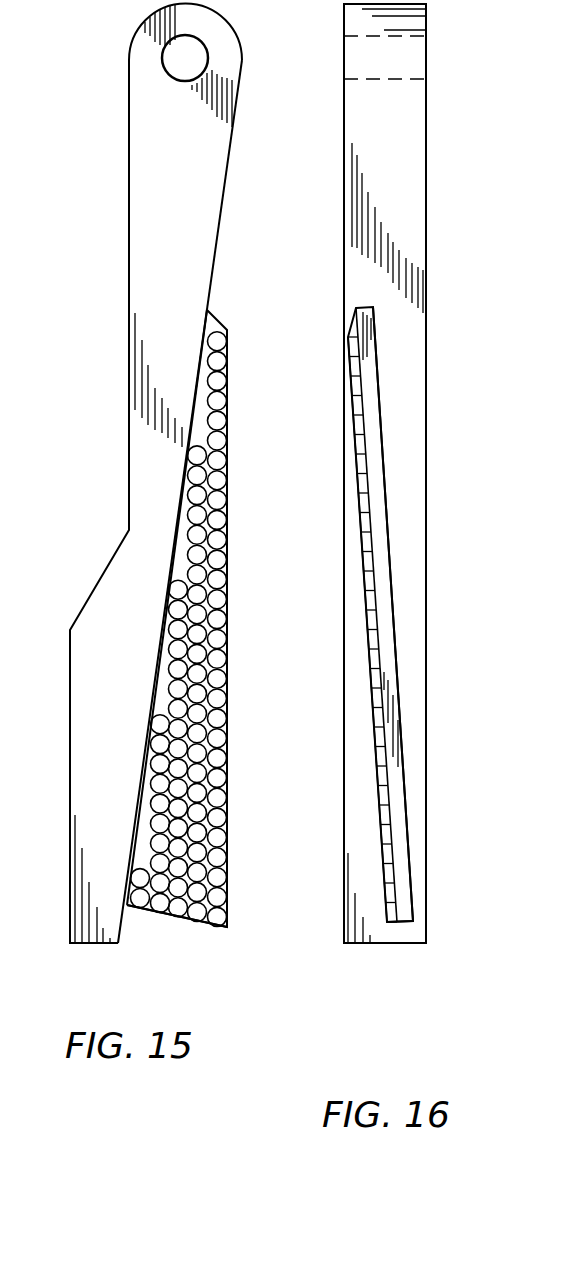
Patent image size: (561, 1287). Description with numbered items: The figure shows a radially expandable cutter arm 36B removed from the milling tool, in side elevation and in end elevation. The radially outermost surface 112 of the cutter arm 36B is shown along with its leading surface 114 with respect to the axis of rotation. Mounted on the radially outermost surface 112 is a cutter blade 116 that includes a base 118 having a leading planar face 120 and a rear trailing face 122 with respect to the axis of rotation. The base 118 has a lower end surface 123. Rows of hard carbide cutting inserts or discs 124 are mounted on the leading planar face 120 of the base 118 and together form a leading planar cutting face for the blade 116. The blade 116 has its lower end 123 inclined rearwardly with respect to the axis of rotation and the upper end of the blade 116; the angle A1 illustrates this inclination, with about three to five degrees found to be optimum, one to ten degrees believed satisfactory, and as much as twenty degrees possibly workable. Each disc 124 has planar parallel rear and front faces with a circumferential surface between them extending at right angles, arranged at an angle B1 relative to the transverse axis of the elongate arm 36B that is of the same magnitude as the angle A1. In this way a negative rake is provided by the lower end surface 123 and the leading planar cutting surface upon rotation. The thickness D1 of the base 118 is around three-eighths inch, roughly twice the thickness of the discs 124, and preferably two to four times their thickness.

In FIG. 15, the cutter arm 36B is at (124, 245).
In FIG. 16, the cutter arm 36B is at (434, 200).
In FIG. 15, the radially outermost surface 112 is at (218, 247).
In FIG. 16, the radially outermost surface 112 is at (415, 351).
In FIG. 15, the leading surface 114 is at (70, 695).
In FIG. 16, the leading surface 114 is at (343, 531).
In FIG. 15, the cutter blade 116 is at (232, 487).
In FIG. 16, the cutter blade 116 is at (400, 569).
In FIG. 15, the base 118 is at (228, 562).
In FIG. 16, the base 118 is at (373, 422).
In FIG. 15, the leading planar face 120 is at (165, 639).
In FIG. 16, the leading planar face 120 is at (368, 628).
In FIG. 16, the rear trailing face 122 is at (398, 672).
In FIG. 15, the lower end surface 123 is at (190, 923).
In FIG. 16, the lower end surface 123 is at (403, 923).
In FIG. 15, the cutting inserts or discs 124 is at (217, 401).
In FIG. 16, the cutting inserts or discs 124 is at (353, 400).
In FIG. 16, the thickness of base D1 is at (358, 840).
In FIG. 16, the angle of disc circumferential surface B1 is at (413, 921).
In FIG. 16, the angle of inclination of blade A1 is at (387, 922).